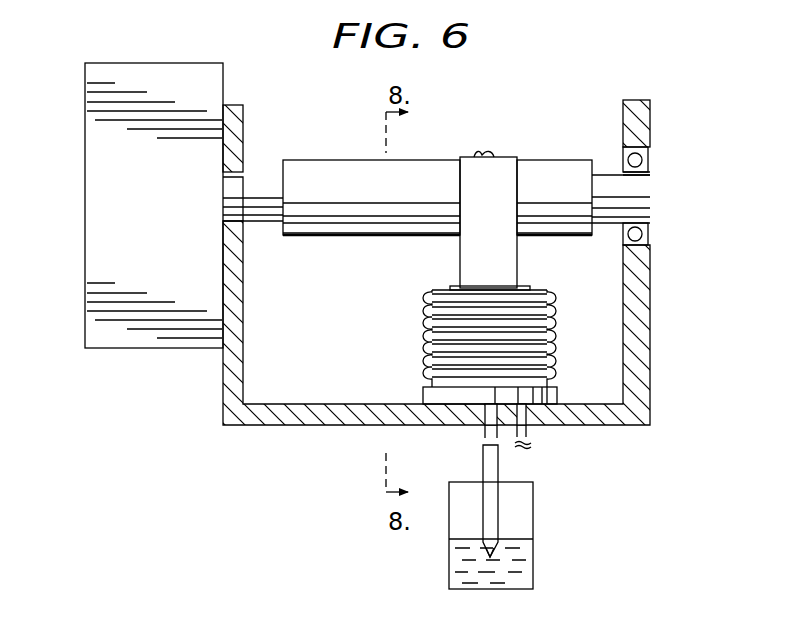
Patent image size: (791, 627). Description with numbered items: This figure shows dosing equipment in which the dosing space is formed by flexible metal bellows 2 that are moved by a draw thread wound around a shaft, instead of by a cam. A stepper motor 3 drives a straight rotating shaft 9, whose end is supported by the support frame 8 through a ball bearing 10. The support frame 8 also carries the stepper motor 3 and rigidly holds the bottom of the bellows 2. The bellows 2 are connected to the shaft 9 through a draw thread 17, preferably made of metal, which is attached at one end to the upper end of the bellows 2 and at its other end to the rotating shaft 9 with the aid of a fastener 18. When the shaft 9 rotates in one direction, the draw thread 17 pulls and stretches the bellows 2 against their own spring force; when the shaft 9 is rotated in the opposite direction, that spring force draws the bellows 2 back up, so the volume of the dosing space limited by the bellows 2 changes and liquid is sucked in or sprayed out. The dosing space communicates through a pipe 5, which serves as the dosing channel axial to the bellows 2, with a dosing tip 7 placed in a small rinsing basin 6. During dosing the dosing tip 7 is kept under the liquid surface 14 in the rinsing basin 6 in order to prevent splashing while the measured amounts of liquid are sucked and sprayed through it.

The flexible metal bellows 2 is at (423, 321).
The stepper motor 3 is at (125, 343).
The pipe 5 is at (493, 462).
The small rinsing basin 6 is at (523, 497).
The dosing tip 7 is at (486, 553).
The support frame 8 is at (645, 342).
The shaft 9 is at (315, 162).
The ball bearing 10 is at (642, 160).
The liquid surface 14 is at (523, 538).
The draw thread 17 is at (520, 176).
The fastener 18 is at (480, 152).